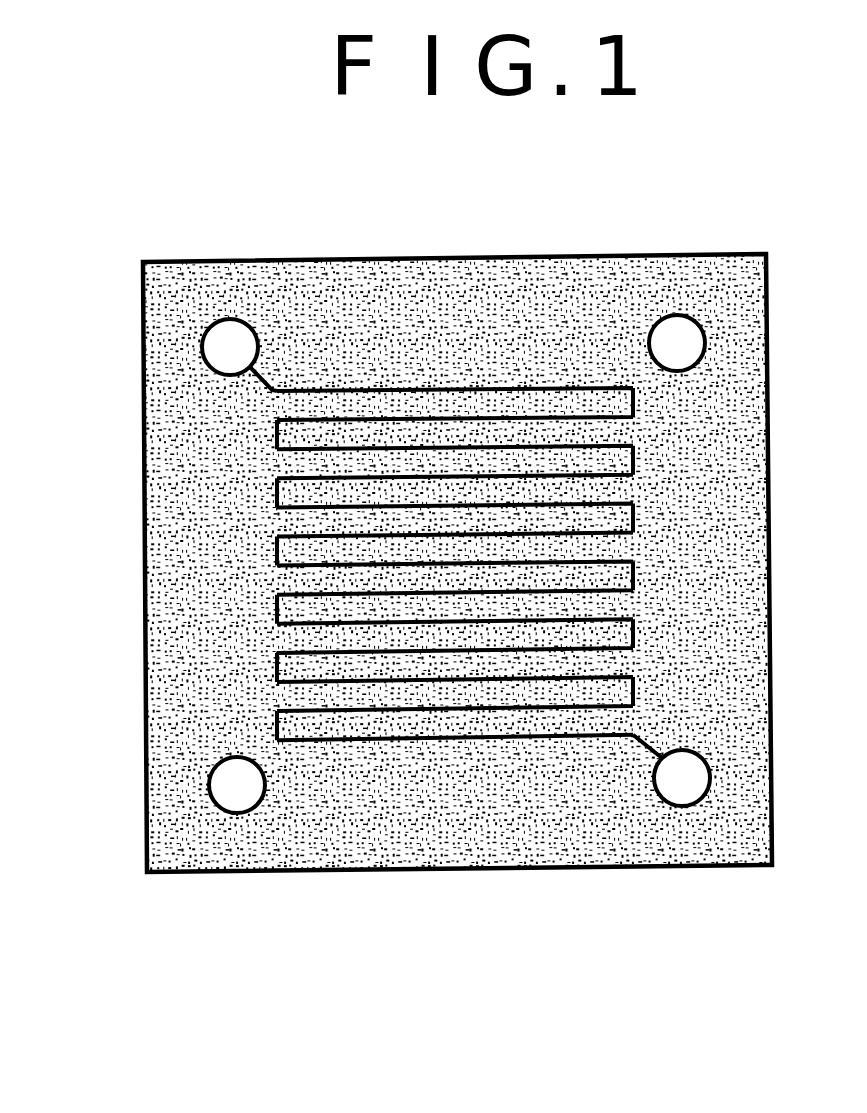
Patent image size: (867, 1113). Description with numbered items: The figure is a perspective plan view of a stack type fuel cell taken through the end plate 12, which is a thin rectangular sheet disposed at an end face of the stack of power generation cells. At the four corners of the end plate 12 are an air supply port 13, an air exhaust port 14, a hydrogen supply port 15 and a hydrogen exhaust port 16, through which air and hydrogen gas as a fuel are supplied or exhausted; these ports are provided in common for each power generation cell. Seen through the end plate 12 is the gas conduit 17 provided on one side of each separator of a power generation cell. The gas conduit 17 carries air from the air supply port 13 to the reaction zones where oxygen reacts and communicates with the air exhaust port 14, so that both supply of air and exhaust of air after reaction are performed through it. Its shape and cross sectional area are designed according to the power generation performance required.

The end plate 12 is at (177, 585).
The air supply port 13 is at (228, 352).
The air exhaust port 14 is at (682, 795).
The hydrogen supply port 15 is at (678, 342).
The hydrogen exhaust port 16 is at (237, 802).
The gas conduit 17 is at (277, 390).